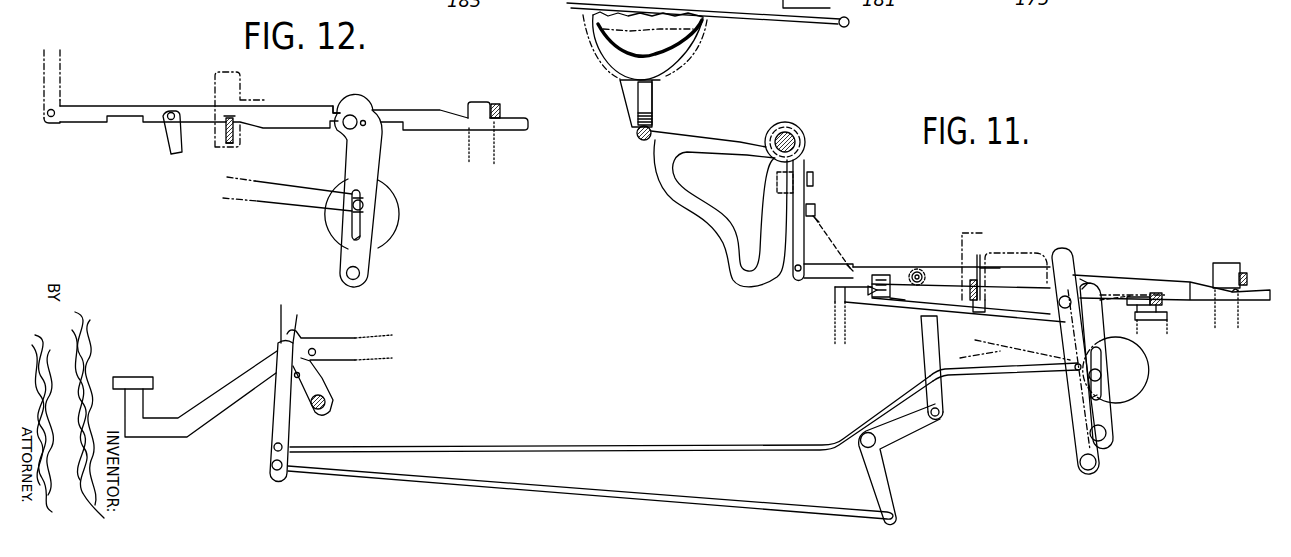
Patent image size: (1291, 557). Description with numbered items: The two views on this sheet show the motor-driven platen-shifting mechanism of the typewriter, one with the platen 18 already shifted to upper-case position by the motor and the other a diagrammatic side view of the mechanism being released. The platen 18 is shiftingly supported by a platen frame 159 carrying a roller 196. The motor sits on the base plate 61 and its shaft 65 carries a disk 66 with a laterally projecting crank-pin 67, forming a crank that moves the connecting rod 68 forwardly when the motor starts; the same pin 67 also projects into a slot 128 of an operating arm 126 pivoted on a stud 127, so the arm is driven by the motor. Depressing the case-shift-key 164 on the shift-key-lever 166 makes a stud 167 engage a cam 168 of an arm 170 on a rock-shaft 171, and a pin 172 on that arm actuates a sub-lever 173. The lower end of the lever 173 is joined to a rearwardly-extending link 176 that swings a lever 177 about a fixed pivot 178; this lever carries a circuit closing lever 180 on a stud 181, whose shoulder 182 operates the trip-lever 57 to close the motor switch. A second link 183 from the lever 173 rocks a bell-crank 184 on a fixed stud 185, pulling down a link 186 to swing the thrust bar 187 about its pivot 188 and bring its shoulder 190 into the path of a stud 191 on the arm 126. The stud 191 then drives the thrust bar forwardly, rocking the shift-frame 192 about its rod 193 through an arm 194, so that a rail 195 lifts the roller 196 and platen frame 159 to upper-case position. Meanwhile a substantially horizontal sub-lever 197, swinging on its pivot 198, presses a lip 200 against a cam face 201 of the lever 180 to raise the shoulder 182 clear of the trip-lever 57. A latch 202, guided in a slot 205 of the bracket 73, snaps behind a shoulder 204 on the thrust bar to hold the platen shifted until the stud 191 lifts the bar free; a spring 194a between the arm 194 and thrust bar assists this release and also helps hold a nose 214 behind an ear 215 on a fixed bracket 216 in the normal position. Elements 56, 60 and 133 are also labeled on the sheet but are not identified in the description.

In FIG. 11, the platen 18 is at (700, 40).
In FIG. 11, the adjusting block 56 is at (1135, 305).
In FIG. 11, the trip-lever 57 is at (1152, 320).
In FIG. 11, the support 60 is at (1168, 318).
In FIG. 11, the base plate 61 is at (833, 315).
In FIG. 12, the shaft 65 is at (354, 222).
In FIG. 11, the shaft 65 is at (1106, 378).
In FIG. 12, the disk 66 is at (393, 232).
In FIG. 11, the disk 66 is at (1147, 377).
In FIG. 12, the crank-pin 67 is at (365, 207).
In FIG. 11, the crank-pin 67 is at (1102, 368).
In FIG. 12, the connecting rod 68 is at (280, 202).
In FIG. 11, the connecting rod 68 is at (993, 364).
In FIG. 12, the bracket 73 is at (214, 77).
In FIG. 11, the bracket 73 is at (981, 232).
In FIG. 12, the operating arm 126 is at (380, 150).
In FIG. 11, the operating arm 126 is at (1112, 418).
In FIG. 12, the stud 127 is at (360, 272).
In FIG. 11, the stud 127 is at (1107, 440).
In FIG. 12, the slot 128 is at (357, 246).
In FIG. 11, the slot 128 is at (1092, 398).
In FIG. 12, the pivot pin 133 is at (346, 130).
In FIG. 11, the platen frame 159 is at (664, 74).
In FIG. 11, the case-shift-key 164 is at (153, 382).
In FIG. 11, the shift-key-lever 166 is at (228, 413).
In FIG. 11, the stud 167 is at (316, 352).
In FIG. 11, the cam 168 is at (298, 333).
In FIG. 11, the arm 170 is at (328, 380).
In FIG. 11, the rock-shaft 171 is at (322, 412).
In FIG. 11, the pin 172 is at (298, 378).
In FIG. 12, the sub-lever 173 is at (61, 82).
In FIG. 11, the sub-lever 173 is at (277, 415).
In FIG. 11, the link 176 is at (707, 451).
In FIG. 11, the lever 177 is at (1072, 425).
In FIG. 11, the fixed pivot 178 is at (1087, 475).
In FIG. 11, the circuit closing lever 180 is at (1007, 319).
In FIG. 11, the stud 181 is at (1059, 300).
In FIG. 11, the shoulder 182 is at (1168, 296).
In FIG. 11, the second link 183 is at (447, 484).
In FIG. 11, the bell-crank 184 is at (888, 483).
In FIG. 11, the fixed stud 185 is at (866, 433).
In FIG. 12, the link 186 is at (168, 138).
In FIG. 11, the link 186 is at (922, 350).
In FIG. 12, the thrust bar 187 is at (134, 106).
In FIG. 11, the thrust bar 187 is at (892, 267).
In FIG. 11, the pivot 188 is at (797, 278).
In FIG. 12, the shoulder 190 is at (336, 112).
In FIG. 11, the shoulder 190 is at (1080, 288).
In FIG. 12, the stud 191 is at (366, 120).
In FIG. 11, the stud 191 is at (1084, 281).
In FIG. 11, the shift-frame 192 is at (695, 205).
In FIG. 11, the rod 193 is at (798, 138).
In FIG. 11, the arm 194 is at (815, 210).
In FIG. 11, the spring 194a is at (822, 225).
In FIG. 11, the rail 195 is at (636, 140).
In FIG. 11, the roller 196 is at (653, 107).
In FIG. 11, the sub-lever 197 is at (872, 296).
In FIG. 11, the pivot 198 is at (878, 276).
In FIG. 11, the lip 200 is at (893, 290).
In FIG. 11, the cam face 201 is at (882, 303).
In FIG. 12, the latch 202 is at (225, 133).
In FIG. 11, the latch 202 is at (970, 289).
In FIG. 12, the shoulder 204 is at (229, 116).
In FIG. 11, the shoulder 204 is at (972, 280).
In FIG. 12, the slot 205 is at (233, 146).
In FIG. 11, the slot 205 is at (977, 312).
In FIG. 12, the nose 214 is at (494, 104).
In FIG. 11, the nose 214 is at (1236, 291).
In FIG. 12, the ear 215 is at (502, 110).
In FIG. 11, the ear 215 is at (1247, 274).
In FIG. 12, the fixed bracket 216 is at (468, 150).
In FIG. 11, the fixed bracket 216 is at (1225, 263).